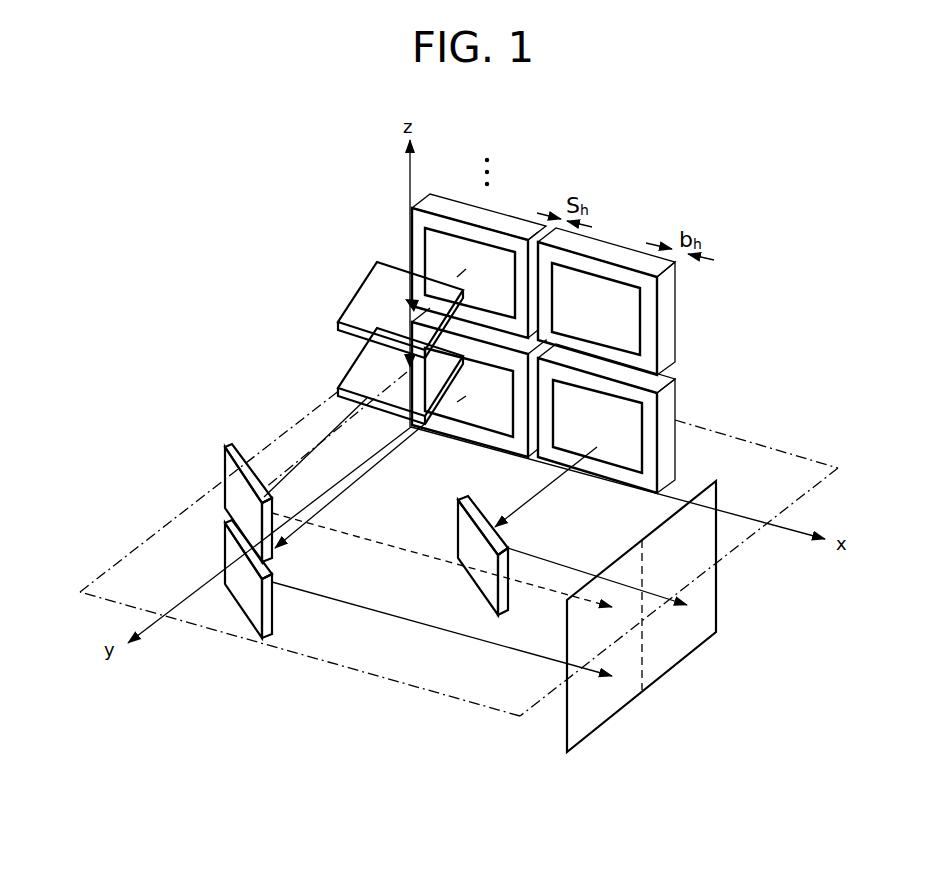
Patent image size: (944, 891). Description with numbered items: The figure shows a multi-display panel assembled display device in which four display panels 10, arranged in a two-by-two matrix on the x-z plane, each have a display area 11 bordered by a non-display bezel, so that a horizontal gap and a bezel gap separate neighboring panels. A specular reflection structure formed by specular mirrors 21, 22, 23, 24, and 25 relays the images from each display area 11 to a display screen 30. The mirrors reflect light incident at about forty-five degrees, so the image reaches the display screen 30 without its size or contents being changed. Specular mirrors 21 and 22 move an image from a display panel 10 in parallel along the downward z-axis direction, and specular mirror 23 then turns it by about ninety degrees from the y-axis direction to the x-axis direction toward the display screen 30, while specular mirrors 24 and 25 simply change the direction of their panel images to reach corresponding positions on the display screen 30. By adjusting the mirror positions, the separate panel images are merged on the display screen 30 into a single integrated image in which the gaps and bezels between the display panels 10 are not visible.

The display panel 10 is at (668, 288).
The display area 11 is at (620, 340).
The specular mirror 21 is at (352, 291).
The specular mirror 22 is at (340, 374).
The specular mirror 23 is at (230, 468).
The specular mirror 24 is at (230, 546).
The specular mirror 25 is at (480, 540).
The display screen 30 is at (715, 623).